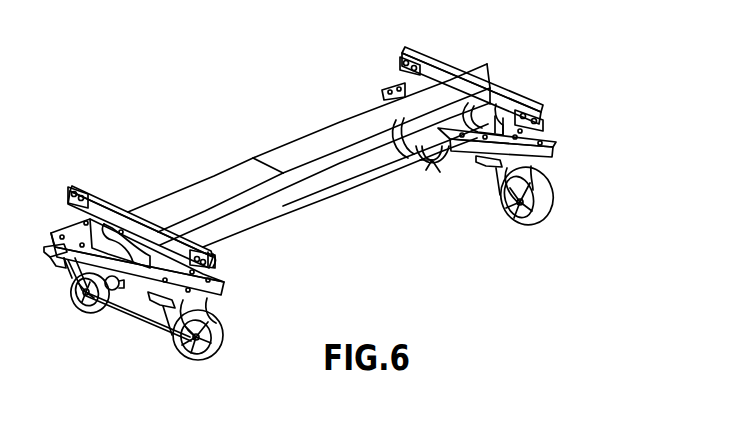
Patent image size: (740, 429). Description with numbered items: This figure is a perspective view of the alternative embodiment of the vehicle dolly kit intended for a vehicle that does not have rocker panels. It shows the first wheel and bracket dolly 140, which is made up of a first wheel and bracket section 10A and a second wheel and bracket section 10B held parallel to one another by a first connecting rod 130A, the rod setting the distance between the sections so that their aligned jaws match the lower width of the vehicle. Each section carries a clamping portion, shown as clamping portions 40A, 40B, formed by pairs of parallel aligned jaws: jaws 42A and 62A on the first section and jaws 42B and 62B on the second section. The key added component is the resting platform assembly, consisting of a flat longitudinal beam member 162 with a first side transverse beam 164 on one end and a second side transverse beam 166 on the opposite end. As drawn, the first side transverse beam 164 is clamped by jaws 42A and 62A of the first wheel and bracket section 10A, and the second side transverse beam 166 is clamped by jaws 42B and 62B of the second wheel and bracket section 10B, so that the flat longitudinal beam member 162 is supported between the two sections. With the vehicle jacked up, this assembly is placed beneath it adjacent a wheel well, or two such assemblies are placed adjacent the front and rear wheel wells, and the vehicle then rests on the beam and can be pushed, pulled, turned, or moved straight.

The first wheel and bracket section 10A is at (236, 315).
The second wheel and bracket section 10B is at (570, 182).
The first base plate 40A is at (146, 262).
The second base plate 40B is at (502, 110).
The jaw 42A is at (72, 200).
The jaw 42B is at (400, 60).
The jaw 62A is at (230, 258).
The jaw 62B is at (563, 125).
The first connecting rod 130A is at (370, 182).
The first wheel and bracket dolly 140 is at (343, 233).
The flat longitudinal beam member 162 is at (309, 133).
The first side transverse beam 164 is at (107, 198).
The second side transverse beam 166 is at (438, 60).